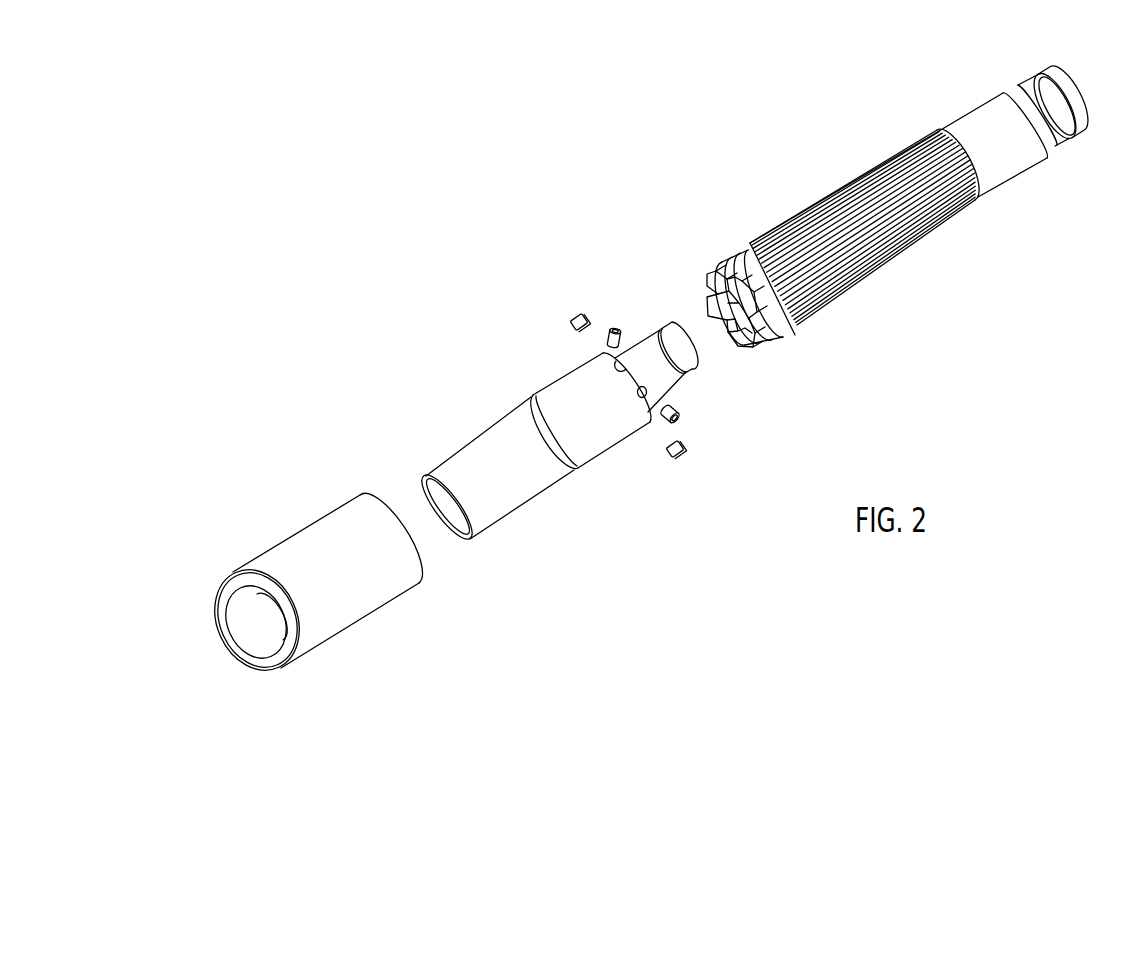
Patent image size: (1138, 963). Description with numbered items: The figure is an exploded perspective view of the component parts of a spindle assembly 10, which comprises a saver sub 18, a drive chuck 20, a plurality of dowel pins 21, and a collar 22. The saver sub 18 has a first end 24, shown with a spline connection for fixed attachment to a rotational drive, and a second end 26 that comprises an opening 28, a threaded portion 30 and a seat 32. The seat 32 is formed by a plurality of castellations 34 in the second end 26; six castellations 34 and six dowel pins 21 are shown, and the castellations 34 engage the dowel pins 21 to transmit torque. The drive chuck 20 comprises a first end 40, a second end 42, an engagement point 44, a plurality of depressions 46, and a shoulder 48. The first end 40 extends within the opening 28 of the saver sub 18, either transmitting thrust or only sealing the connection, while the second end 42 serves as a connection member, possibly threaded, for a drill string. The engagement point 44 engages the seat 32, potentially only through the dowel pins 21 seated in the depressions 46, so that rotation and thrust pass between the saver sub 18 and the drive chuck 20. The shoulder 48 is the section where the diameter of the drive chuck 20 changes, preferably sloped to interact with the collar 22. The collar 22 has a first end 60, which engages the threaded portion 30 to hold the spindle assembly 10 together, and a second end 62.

The spindle assembly 10 is at (357, 400).
The saver sub 18 is at (863, 195).
The drive chuck 20 is at (495, 445).
The dowel pins 21 is at (682, 457).
The collar 22 is at (310, 548).
The first end 24 is at (1062, 80).
The second end 26 is at (777, 348).
The opening 28 is at (697, 310).
The threaded portion 30 is at (790, 330).
The seat 32 is at (710, 282).
The castellations 34 is at (713, 315).
The first end 40 is at (700, 362).
The second end 42 is at (430, 480).
The engagement point 44 is at (648, 410).
The depressions 46 is at (613, 362).
The shoulder 48 is at (580, 467).
The first end 60 is at (419, 585).
The second end 62 is at (253, 668).